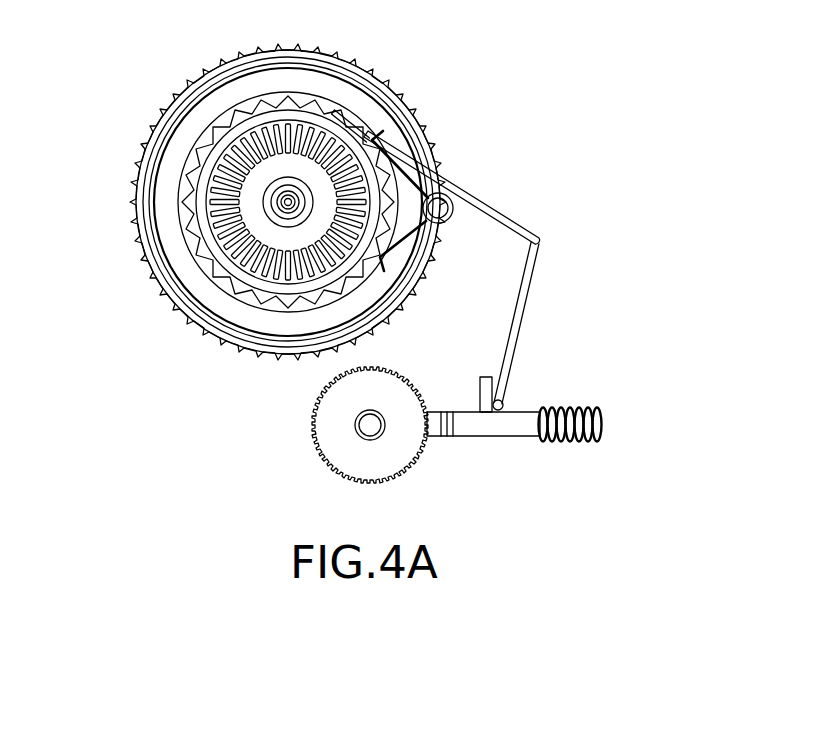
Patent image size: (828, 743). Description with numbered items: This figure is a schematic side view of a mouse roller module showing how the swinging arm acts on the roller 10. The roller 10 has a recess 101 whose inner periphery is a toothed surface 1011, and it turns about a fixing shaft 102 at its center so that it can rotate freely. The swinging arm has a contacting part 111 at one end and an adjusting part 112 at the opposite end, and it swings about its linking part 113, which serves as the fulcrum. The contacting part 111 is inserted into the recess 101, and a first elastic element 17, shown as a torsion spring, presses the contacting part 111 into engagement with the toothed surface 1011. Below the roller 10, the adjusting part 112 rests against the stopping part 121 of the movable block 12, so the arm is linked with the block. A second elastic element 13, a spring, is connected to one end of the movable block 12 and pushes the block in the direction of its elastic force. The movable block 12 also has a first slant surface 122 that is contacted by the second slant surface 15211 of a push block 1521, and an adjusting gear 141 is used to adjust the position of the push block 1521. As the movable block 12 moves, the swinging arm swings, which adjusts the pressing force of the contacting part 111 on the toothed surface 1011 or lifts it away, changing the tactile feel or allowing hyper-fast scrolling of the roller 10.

The roller 10 is at (328, 52).
The recess 101 is at (240, 127).
The toothed surface 1011 is at (190, 153).
The fixing shaft 102 is at (263, 207).
The contacting part 111 is at (340, 117).
The first elastic element 17 is at (418, 153).
The linking part 113 is at (540, 243).
The adjusting part 112 is at (504, 395).
The stopping part 121 is at (490, 378).
The movable block 12 is at (510, 427).
The first slant surface 122 is at (457, 427).
The push block 1521 is at (427, 438).
The second slant surface 15211 is at (440, 412).
The second elastic element 13 is at (583, 407).
The adjusting gear 141 is at (330, 428).